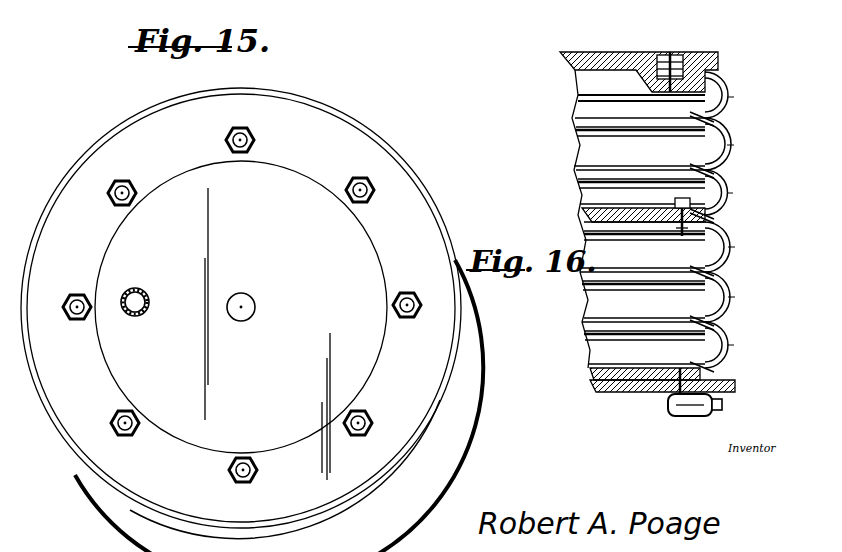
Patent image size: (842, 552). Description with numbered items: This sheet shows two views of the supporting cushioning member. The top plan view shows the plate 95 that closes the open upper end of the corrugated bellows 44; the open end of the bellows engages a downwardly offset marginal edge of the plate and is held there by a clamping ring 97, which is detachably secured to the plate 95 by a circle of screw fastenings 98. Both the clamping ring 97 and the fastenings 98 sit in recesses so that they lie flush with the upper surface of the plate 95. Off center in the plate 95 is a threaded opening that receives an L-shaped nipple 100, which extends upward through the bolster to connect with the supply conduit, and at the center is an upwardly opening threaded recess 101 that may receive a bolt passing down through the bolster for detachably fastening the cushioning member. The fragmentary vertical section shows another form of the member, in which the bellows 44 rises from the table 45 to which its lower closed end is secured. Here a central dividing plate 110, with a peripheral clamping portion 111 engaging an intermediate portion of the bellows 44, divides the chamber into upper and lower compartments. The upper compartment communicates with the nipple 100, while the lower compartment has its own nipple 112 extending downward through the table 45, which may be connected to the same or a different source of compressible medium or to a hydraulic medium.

In FIG. 15, the plate 95 is at (265, 218).
In FIG. 15, the clamping ring 97 is at (416, 216).
In FIG. 15, the screw fastenings 98 is at (405, 318).
In FIG. 15, the L-shaped nipple 100 is at (149, 300).
In FIG. 15, the threaded recess 101 is at (255, 306).
In FIG. 16, the bellows 44 is at (733, 158).
In FIG. 16, the central dividing plate 110 is at (652, 200).
In FIG. 16, the peripheral clamping portion 111 is at (681, 236).
In FIG. 16, the table 45 is at (626, 392).
In FIG. 16, the nipple 112 is at (690, 418).